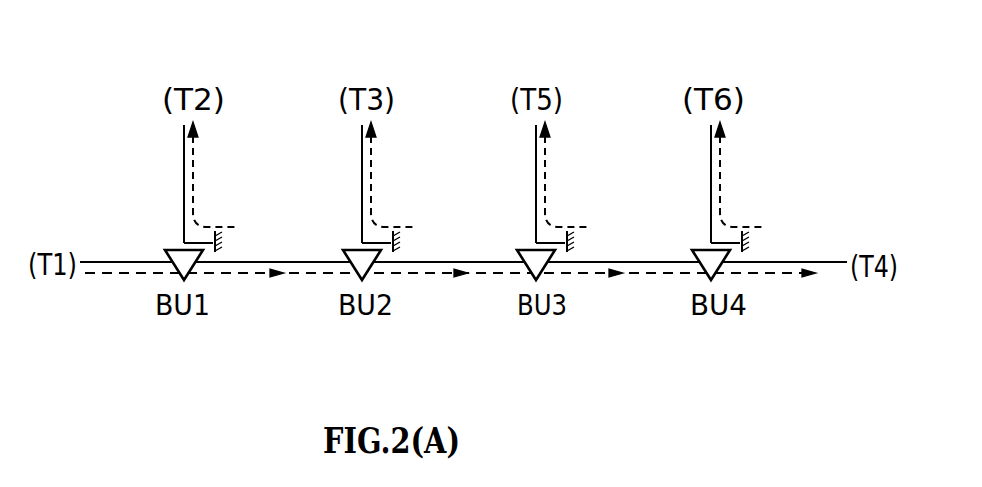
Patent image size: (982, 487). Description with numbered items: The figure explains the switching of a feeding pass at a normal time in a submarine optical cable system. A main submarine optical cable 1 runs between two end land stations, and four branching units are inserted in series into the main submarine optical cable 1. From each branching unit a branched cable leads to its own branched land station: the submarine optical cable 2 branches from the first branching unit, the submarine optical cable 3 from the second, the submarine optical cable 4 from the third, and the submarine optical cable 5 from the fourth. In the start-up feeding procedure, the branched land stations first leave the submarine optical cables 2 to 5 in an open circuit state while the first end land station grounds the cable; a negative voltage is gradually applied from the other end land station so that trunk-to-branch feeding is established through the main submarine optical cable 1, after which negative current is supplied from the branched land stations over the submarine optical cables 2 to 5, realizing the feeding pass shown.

The main submarine optical cable 1 is at (257, 262).
The submarine optical cable 2 is at (184, 164).
The submarine optical cable 3 is at (362, 172).
The submarine optical cable 4 is at (536, 172).
The submarine optical cable 5 is at (711, 172).